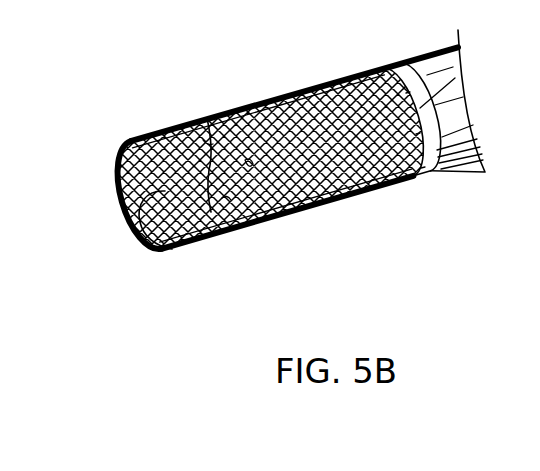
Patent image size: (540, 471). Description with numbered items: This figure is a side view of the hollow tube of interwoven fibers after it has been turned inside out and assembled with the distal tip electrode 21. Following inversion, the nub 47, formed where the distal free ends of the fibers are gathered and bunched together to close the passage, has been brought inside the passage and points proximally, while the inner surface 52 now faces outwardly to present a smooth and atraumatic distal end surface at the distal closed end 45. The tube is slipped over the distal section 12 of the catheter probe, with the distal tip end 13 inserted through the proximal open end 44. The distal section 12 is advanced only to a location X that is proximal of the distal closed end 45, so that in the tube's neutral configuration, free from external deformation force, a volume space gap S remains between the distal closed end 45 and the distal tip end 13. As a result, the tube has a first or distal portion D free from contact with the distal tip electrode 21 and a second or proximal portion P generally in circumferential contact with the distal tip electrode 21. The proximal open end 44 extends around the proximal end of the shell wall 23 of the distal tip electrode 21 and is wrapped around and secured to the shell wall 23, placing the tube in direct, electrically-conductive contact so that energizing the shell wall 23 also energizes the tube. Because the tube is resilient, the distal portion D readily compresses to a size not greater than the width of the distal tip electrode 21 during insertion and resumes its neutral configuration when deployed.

The distal section 12 is at (382, 66).
The distal tip end 13 is at (188, 123).
The distal tip electrode 21 is at (413, 185).
The shell wall 23 is at (458, 66).
The proximal open end 44 is at (323, 80).
The distal closed end 45 is at (123, 137).
The nub 47 is at (165, 255).
The inner surface 52 is at (303, 212).
The volume space gap S is at (203, 247).
The location X is at (214, 105).
The distal portion D is at (106, 126).
The proximal portion P is at (430, 253).